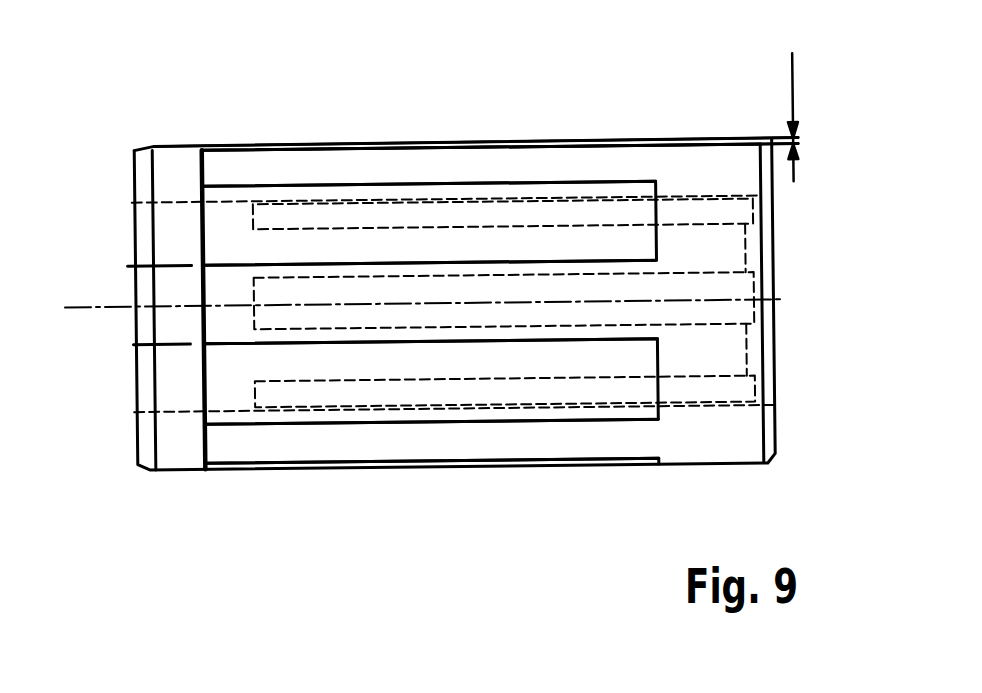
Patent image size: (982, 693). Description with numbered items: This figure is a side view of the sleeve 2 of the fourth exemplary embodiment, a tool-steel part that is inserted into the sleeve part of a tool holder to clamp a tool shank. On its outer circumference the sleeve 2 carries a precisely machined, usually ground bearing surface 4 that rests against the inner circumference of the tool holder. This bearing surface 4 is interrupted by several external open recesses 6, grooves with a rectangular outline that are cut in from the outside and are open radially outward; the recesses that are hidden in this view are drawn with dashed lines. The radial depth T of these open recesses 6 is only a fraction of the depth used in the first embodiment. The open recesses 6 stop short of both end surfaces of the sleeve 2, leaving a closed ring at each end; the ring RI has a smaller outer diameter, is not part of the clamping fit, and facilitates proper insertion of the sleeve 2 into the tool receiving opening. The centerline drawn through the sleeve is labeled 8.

The sleeve 2 is at (172, 105).
The ring RI is at (172, 178).
The center axis 8 is at (127, 308).
The external open recesses 6 is at (322, 243).
The bearing surface 4 is at (418, 292).
The depth T is at (762, 82).